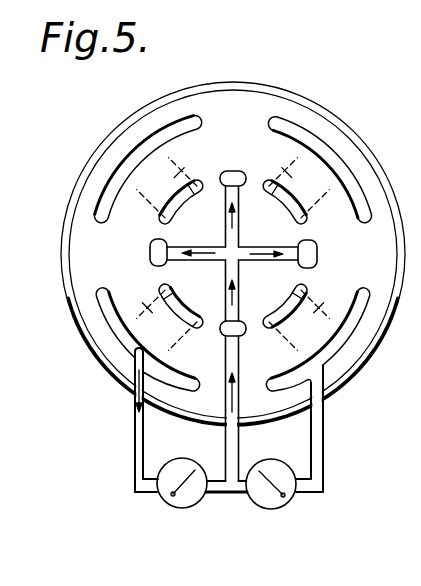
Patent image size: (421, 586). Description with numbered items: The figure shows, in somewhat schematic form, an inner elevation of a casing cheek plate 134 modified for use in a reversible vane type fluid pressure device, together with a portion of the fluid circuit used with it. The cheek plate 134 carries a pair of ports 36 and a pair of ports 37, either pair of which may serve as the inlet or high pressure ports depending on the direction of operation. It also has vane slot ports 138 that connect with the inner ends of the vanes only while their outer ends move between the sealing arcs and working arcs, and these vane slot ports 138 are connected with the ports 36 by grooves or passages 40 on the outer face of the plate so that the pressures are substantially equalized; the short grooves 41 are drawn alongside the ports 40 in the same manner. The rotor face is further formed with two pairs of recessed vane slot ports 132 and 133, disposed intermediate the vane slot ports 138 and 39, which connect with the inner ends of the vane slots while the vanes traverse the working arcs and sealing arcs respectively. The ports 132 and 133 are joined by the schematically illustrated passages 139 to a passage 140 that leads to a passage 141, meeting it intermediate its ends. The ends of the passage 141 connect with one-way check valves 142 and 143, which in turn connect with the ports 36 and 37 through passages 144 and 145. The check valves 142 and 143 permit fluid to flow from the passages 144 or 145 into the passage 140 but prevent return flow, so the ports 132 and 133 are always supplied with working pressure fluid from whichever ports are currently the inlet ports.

The casing cheek plate 134 is at (104, 150).
The port 37 is at (200, 120).
The port 36 is at (298, 130).
The short rib 41 is at (182, 168).
The groove or passage 40 is at (284, 170).
The vane slot port 39 is at (164, 218).
The vane slot port 138 is at (302, 218).
The recessed vane slot port 133 is at (150, 249).
The recessed vane slot port 132 is at (222, 173).
The passage 139 is at (250, 232).
The passage 140 is at (239, 358).
The passage 141 is at (232, 494).
The one-way check valve 142 is at (182, 509).
The one-way check valve 143 is at (276, 510).
The passage 144 is at (134, 462).
The passage 145 is at (324, 464).